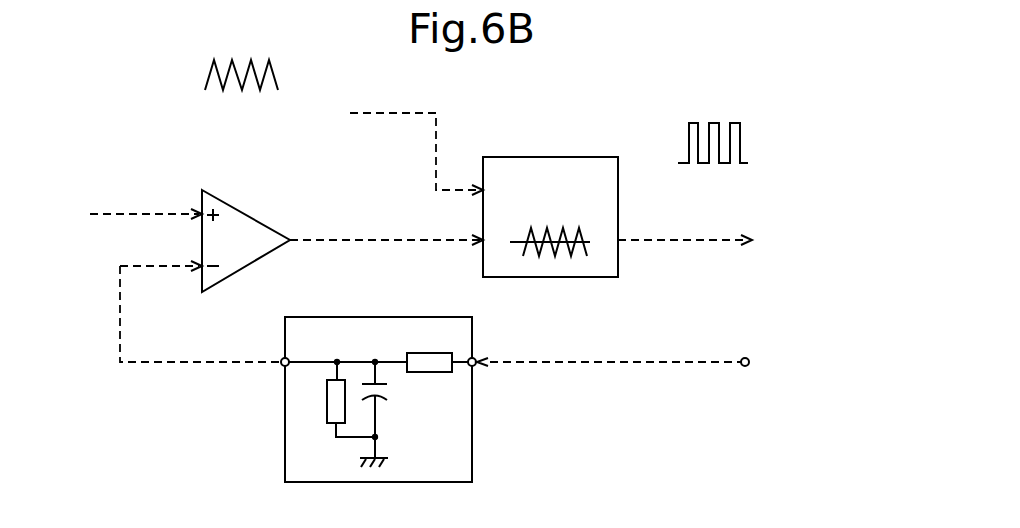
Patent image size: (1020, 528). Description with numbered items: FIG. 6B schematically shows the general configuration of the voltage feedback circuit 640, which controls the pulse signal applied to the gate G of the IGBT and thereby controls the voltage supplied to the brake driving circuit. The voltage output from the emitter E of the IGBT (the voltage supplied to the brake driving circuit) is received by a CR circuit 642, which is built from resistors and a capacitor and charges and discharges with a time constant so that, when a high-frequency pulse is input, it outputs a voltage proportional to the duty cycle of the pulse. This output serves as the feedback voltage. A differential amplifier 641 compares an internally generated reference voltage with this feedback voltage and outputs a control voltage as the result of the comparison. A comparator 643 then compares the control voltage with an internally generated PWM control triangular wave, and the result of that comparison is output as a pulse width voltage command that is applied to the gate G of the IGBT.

The voltage feedback circuit 640 is at (486, 113).
The differential amplifier 641 is at (255, 217).
The CR circuit 642 is at (472, 436).
The comparator 643 is at (565, 157).